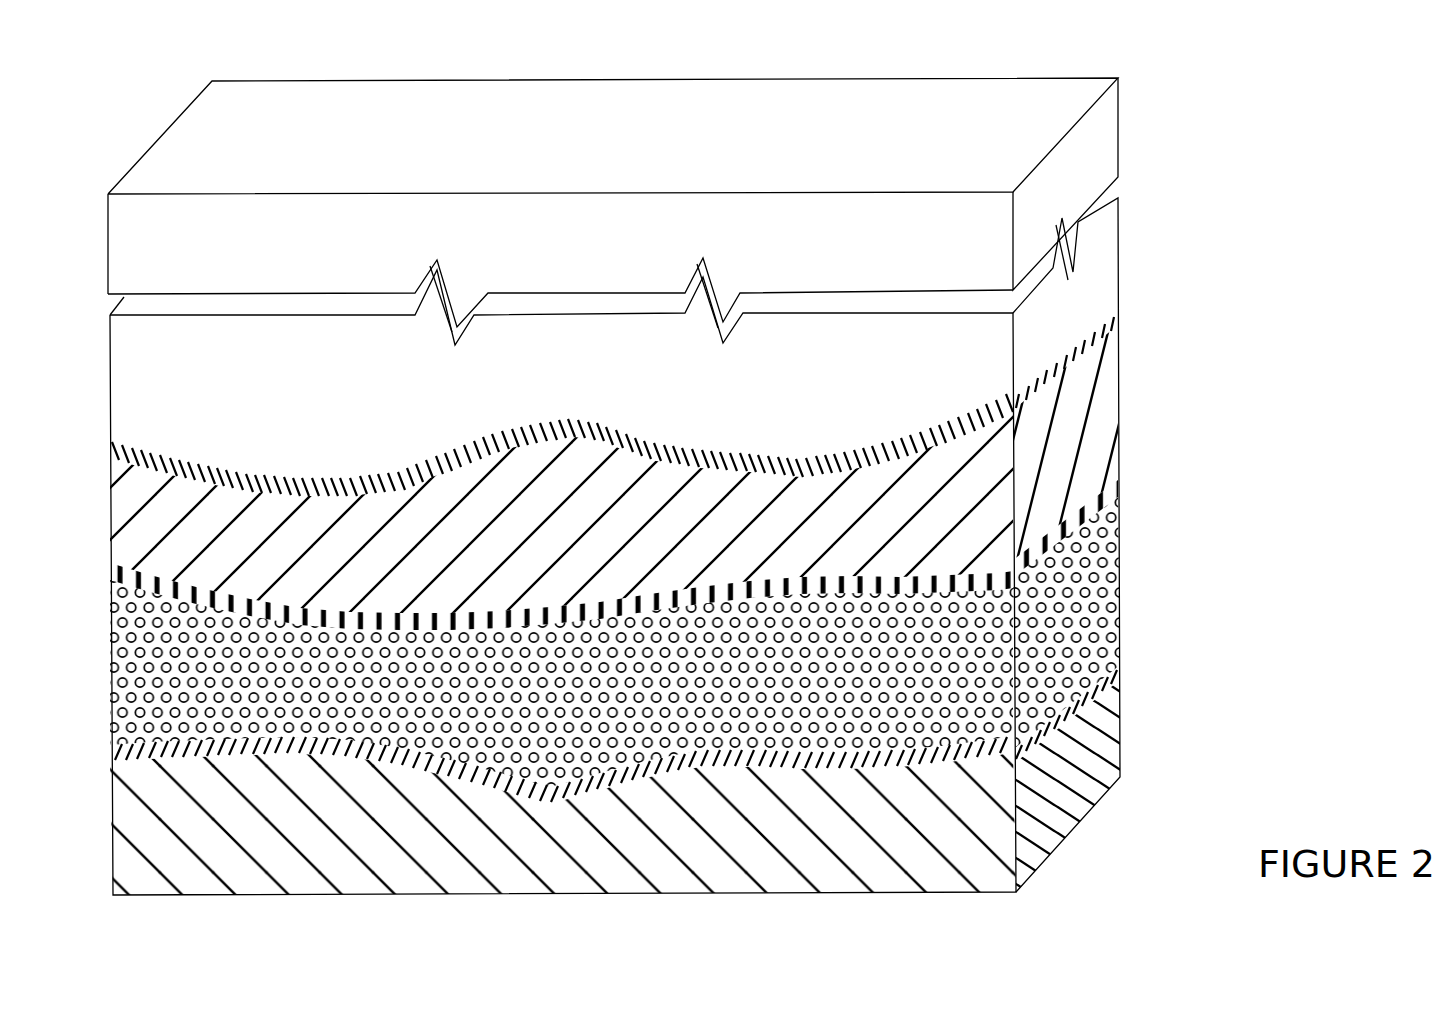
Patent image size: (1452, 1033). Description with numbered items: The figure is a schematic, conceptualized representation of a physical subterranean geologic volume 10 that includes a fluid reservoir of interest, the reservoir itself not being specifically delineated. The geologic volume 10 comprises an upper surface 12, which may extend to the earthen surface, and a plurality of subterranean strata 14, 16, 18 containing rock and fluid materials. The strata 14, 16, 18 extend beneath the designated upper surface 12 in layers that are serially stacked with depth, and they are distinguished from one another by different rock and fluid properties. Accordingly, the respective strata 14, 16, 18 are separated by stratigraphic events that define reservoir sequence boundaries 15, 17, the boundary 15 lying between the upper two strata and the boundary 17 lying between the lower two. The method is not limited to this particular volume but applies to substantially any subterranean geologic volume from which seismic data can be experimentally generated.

The geologic volume 10 is at (777, 73).
The upper surface 12 is at (1010, 112).
The subterranean stratum 14 is at (1097, 418).
The reservoir sequence boundary 15 is at (1115, 500).
The subterranean stratum 16 is at (1113, 593).
The reservoir sequence boundary 17 is at (1113, 670).
The subterranean stratum 18 is at (1097, 760).